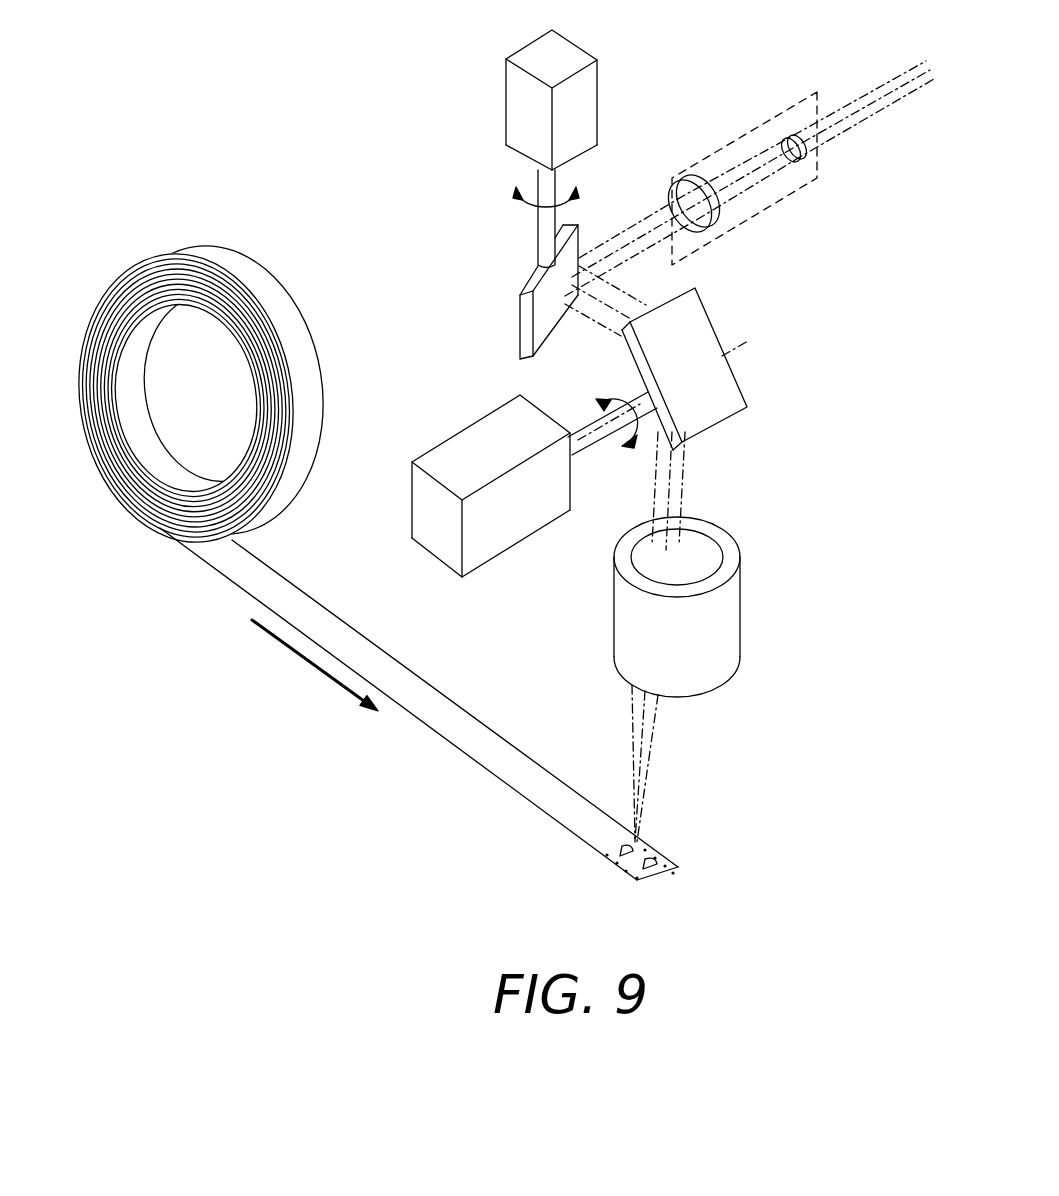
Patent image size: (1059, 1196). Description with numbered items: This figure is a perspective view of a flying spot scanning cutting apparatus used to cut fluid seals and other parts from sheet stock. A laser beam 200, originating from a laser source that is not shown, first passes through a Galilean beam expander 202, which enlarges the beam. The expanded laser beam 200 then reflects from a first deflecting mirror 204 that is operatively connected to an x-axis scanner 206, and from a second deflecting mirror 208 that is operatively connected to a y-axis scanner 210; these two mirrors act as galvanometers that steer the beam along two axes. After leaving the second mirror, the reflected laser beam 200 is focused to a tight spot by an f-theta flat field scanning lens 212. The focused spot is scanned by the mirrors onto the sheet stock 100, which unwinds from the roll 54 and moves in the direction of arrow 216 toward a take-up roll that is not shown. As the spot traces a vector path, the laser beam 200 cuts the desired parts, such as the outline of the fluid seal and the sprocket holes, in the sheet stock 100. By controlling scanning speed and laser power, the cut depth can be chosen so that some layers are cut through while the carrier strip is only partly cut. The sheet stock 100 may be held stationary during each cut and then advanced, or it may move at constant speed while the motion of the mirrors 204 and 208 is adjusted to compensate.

The roll 54 is at (265, 283).
The sheet stock 100 is at (487, 772).
The arrow 216 is at (305, 663).
The x-axis scanner 206 is at (513, 107).
The first deflecting mirror 204 is at (525, 322).
The laser beam 200 is at (870, 92).
The Galilean beam expander 202 is at (760, 213).
The second deflecting mirror 208 is at (723, 380).
The y-axis scanner 210 is at (503, 540).
The f-theta flat field scanning lens 212 is at (728, 625).